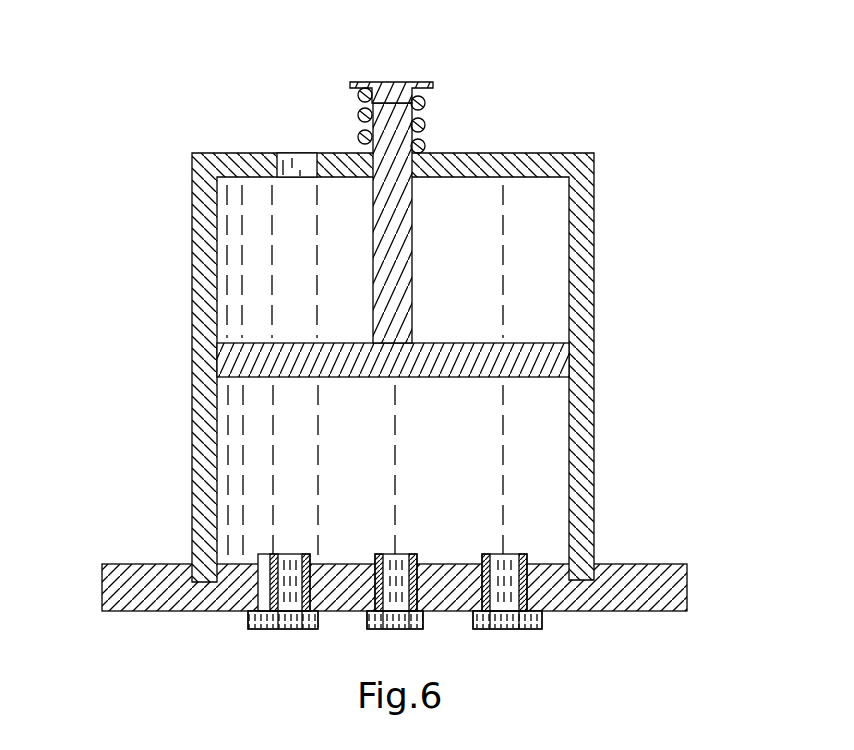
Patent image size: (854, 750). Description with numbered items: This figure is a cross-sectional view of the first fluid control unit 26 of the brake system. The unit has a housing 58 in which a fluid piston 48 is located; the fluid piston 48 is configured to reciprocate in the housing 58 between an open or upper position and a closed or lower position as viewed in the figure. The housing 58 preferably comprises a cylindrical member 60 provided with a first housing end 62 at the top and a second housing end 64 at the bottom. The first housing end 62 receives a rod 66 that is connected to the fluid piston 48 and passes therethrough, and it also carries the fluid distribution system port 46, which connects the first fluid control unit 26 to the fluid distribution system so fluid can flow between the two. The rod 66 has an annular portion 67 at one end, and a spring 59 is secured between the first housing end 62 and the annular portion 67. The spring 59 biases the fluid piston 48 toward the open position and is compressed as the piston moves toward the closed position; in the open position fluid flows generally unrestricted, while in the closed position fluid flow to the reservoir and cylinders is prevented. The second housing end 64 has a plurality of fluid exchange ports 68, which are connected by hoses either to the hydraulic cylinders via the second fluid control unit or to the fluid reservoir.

The first fluid control unit 26 is at (192, 278).
The fluid distribution system port 46 is at (303, 157).
The fluid piston 48 is at (555, 363).
The housing 58 is at (192, 330).
The spring 59 is at (427, 124).
The cylindrical member 60 is at (208, 475).
The first housing end 62 is at (203, 177).
The second housing end 64 is at (195, 553).
The rod 66 is at (412, 197).
The annular portion 67 is at (392, 82).
The fluid exchange ports 68 is at (208, 613).